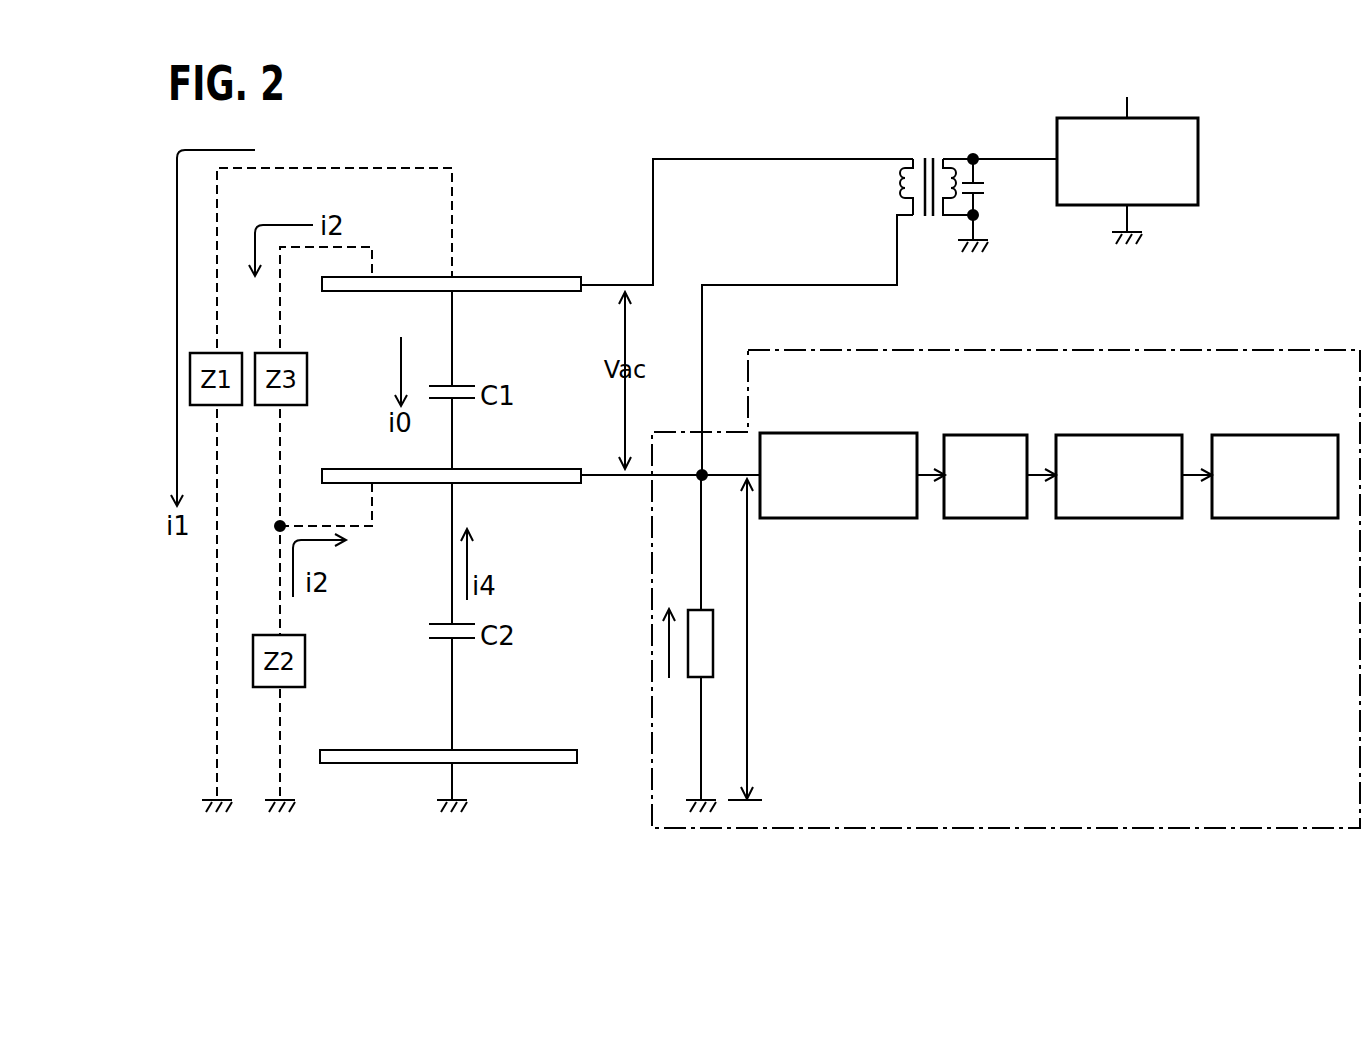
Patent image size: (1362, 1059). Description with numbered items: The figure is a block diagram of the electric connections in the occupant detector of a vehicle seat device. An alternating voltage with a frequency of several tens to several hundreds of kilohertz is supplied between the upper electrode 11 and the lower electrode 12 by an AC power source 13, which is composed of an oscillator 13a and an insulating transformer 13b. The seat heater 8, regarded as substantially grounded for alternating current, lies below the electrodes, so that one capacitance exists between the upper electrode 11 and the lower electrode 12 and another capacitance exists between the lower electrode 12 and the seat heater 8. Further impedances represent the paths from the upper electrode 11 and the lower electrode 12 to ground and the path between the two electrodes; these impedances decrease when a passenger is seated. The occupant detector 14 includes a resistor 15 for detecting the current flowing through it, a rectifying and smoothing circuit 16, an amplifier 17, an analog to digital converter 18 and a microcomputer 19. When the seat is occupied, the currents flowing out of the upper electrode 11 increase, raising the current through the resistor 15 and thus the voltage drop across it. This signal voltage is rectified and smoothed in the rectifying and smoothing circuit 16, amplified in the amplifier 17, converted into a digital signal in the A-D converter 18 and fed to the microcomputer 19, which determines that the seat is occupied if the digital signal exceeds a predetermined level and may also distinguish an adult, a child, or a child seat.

The seat heater 8 is at (552, 750).
The upper electrode 11 is at (538, 277).
The lower electrode 12 is at (538, 469).
The AC power source 13 is at (1066, 154).
The oscillator 13a is at (1198, 160).
The insulating transformer 13b is at (920, 137).
The occupant detector 14 is at (1012, 350).
The resistor 15 is at (706, 606).
The rectifying and smoothing circuit 16 is at (845, 518).
The amplifier 17 is at (978, 518).
The A-D converter 18 is at (1113, 518).
The microcomputer 19 is at (1268, 518).